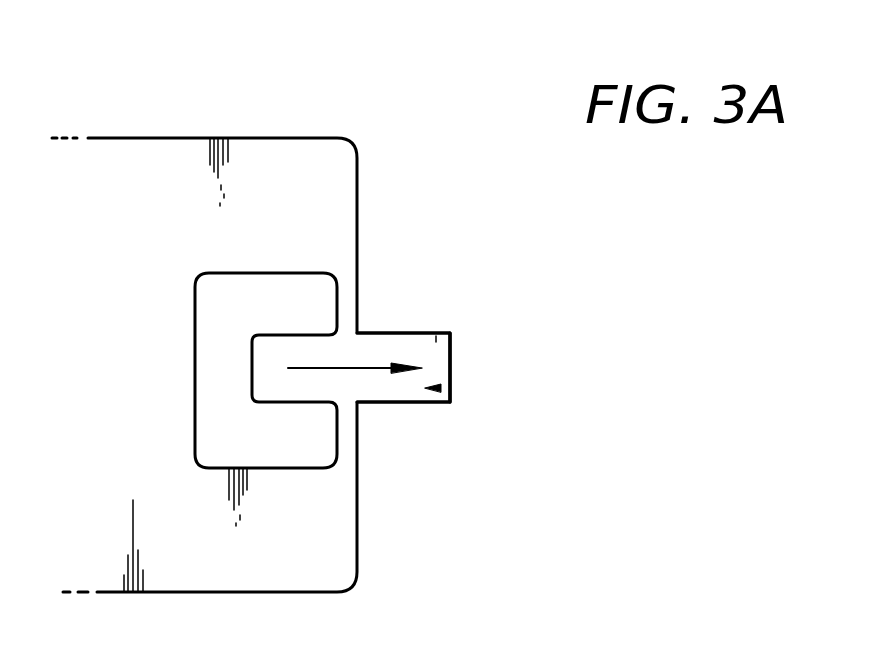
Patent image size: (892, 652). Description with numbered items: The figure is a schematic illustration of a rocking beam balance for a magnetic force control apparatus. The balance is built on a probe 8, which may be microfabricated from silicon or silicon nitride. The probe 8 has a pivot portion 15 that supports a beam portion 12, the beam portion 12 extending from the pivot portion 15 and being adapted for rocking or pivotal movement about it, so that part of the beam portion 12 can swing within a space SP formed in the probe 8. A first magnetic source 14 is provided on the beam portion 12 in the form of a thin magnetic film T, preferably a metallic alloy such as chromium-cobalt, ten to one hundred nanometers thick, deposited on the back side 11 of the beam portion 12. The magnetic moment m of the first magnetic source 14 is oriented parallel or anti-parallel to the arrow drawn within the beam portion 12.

The probe 8 is at (399, 101).
The pivot portion 15 is at (338, 292).
The space SP is at (263, 308).
The beam portion 12 is at (375, 333).
The first magnetic source 14 is at (443, 352).
The thin magnetic film T is at (435, 342).
The magnetic moment m is at (382, 367).
The back side 11 is at (440, 388).